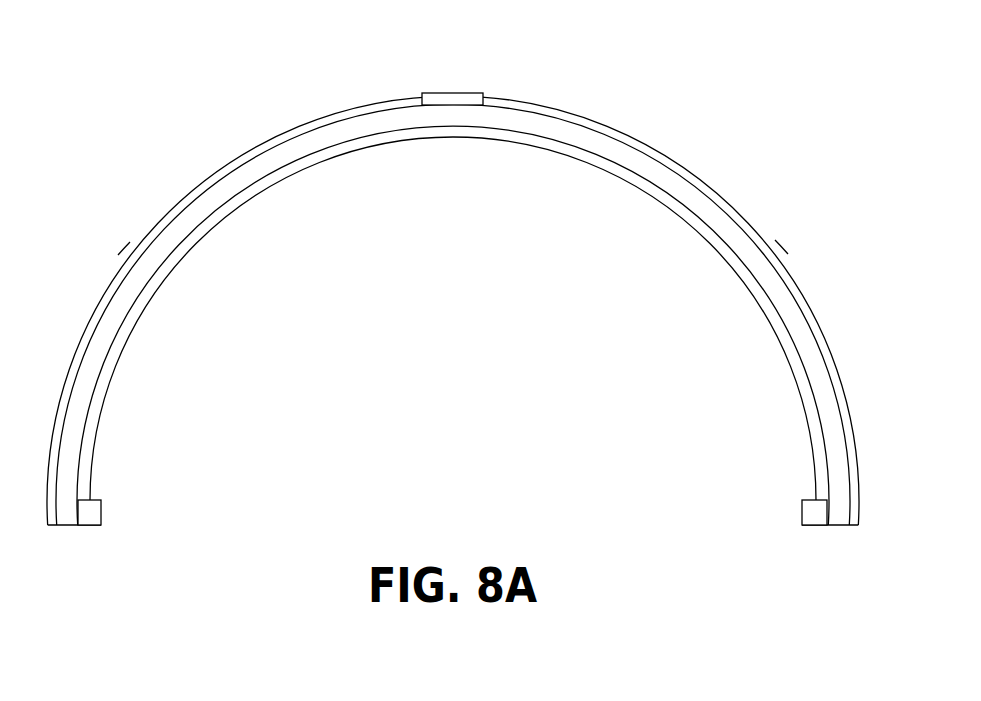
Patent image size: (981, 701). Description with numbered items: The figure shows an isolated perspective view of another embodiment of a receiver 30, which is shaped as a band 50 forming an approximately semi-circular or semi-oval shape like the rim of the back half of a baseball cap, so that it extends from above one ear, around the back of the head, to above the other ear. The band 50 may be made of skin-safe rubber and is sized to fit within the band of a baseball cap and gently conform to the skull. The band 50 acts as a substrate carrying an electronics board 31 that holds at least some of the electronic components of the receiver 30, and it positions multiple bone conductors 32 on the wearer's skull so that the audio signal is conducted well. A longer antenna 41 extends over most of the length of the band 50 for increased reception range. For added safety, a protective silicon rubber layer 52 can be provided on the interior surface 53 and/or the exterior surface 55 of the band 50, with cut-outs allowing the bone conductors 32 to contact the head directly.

The receiver 30 is at (690, 111).
The electronics board 31 is at (455, 92).
The bone conductors 32 is at (101, 512).
The antenna 41 is at (218, 170).
The band 50 is at (453, 325).
The protective material layer 52 is at (282, 172).
The interior surface 53 is at (100, 373).
The exterior surface 55 is at (127, 272).